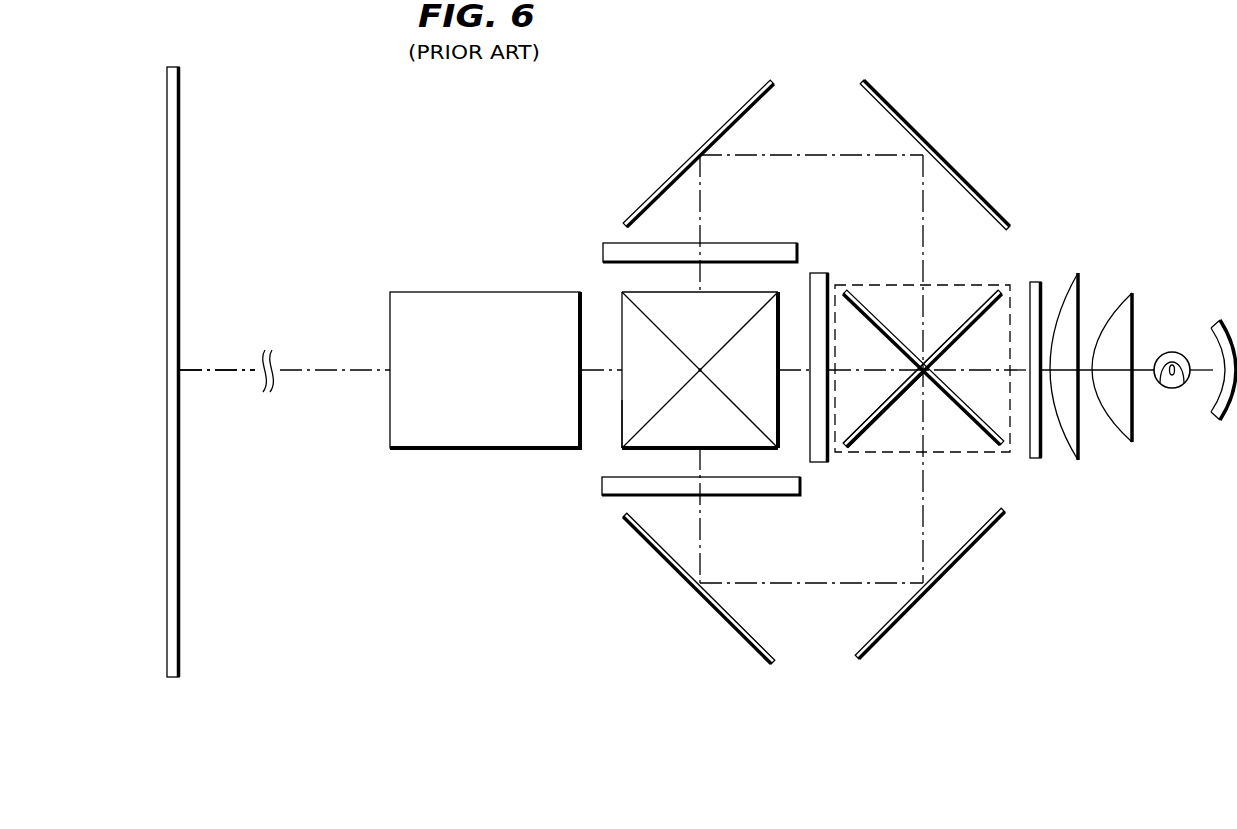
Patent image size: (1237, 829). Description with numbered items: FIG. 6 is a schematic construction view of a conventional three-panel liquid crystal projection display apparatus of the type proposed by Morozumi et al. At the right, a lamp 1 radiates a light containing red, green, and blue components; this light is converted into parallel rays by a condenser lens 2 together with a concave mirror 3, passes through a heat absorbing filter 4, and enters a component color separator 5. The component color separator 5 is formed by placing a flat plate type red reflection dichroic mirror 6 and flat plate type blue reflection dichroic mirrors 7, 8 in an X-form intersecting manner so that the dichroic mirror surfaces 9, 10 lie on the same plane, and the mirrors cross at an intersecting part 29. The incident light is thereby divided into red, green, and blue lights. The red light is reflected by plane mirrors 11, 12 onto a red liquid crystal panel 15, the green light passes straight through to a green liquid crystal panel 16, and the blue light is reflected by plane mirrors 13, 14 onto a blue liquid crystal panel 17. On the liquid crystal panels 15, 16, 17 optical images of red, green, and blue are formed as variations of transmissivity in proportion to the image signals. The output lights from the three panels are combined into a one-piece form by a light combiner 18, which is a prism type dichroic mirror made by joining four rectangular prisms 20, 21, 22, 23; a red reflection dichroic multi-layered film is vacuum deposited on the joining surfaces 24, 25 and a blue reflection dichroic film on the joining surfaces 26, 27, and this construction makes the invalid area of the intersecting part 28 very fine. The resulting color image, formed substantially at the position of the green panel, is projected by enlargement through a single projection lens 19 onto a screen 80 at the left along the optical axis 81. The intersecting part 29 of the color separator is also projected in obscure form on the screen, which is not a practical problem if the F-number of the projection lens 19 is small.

The lamp 1 is at (1172, 352).
The condenser lens 2 is at (1130, 266).
The concave mirror 3 is at (1215, 322).
The heat absorbing filter 4 is at (1033, 457).
The component color separator 5 is at (897, 285).
The red reflection dichroic mirror 6 is at (851, 290).
The blue reflection dichroic mirror 7 is at (998, 294).
The blue reflection dichroic mirror 8 is at (847, 450).
The dichroic mirror surface 9 is at (952, 345).
The dichroic mirror surface 10 is at (880, 413).
The plane mirror 11 is at (978, 193).
The plane mirror 12 is at (665, 182).
The plane mirror 13 is at (980, 542).
The plane mirror 14 is at (665, 557).
The red liquid crystal panel 15 is at (602, 253).
The green liquid crystal panel 16 is at (817, 466).
The blue liquid crystal panel 17 is at (602, 497).
The light combiner 18 is at (622, 310).
The projection lens 19 is at (437, 292).
The rectangular prism 20 is at (780, 303).
The rectangular prism 21 is at (712, 292).
The rectangular prism 22 is at (622, 417).
The rectangular prism 23 is at (675, 446).
The joining surface 24 is at (735, 338).
The joining surface 25 is at (668, 402).
The joining surface 26 is at (732, 400).
The joining surface 27 is at (664, 335).
The intersecting part 28 is at (703, 369).
The intersecting part 29 is at (932, 368).
The screen 80 is at (176, 143).
The optical axis 81 is at (180, 370).